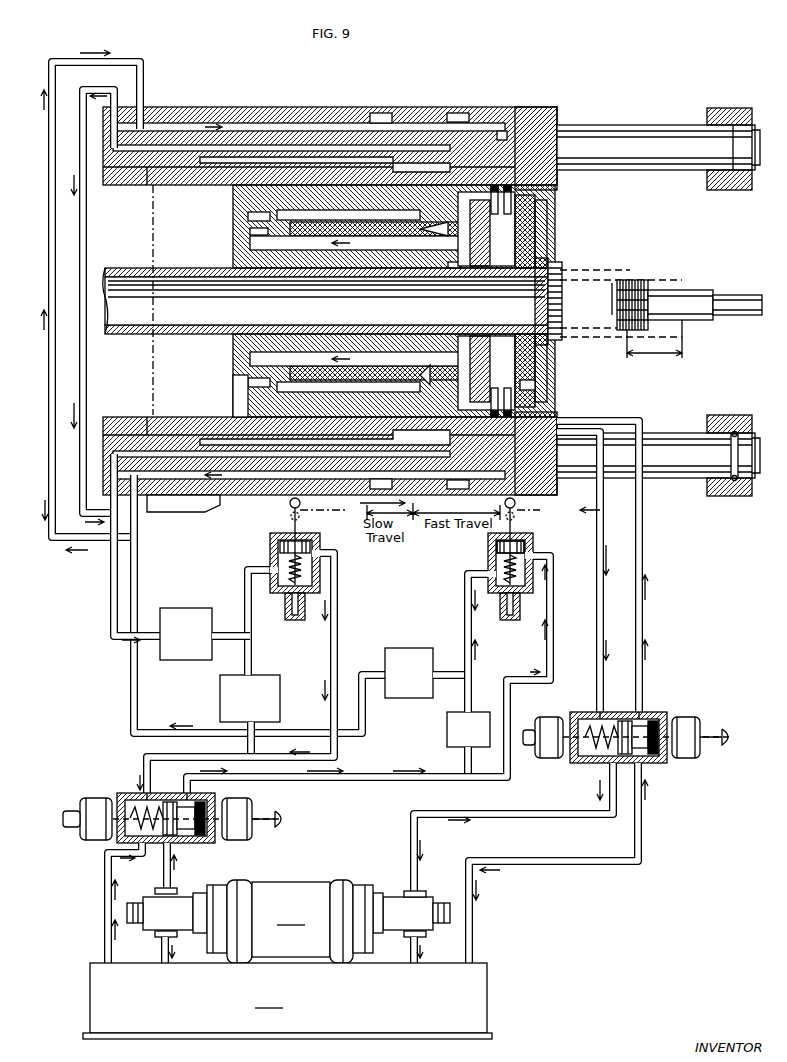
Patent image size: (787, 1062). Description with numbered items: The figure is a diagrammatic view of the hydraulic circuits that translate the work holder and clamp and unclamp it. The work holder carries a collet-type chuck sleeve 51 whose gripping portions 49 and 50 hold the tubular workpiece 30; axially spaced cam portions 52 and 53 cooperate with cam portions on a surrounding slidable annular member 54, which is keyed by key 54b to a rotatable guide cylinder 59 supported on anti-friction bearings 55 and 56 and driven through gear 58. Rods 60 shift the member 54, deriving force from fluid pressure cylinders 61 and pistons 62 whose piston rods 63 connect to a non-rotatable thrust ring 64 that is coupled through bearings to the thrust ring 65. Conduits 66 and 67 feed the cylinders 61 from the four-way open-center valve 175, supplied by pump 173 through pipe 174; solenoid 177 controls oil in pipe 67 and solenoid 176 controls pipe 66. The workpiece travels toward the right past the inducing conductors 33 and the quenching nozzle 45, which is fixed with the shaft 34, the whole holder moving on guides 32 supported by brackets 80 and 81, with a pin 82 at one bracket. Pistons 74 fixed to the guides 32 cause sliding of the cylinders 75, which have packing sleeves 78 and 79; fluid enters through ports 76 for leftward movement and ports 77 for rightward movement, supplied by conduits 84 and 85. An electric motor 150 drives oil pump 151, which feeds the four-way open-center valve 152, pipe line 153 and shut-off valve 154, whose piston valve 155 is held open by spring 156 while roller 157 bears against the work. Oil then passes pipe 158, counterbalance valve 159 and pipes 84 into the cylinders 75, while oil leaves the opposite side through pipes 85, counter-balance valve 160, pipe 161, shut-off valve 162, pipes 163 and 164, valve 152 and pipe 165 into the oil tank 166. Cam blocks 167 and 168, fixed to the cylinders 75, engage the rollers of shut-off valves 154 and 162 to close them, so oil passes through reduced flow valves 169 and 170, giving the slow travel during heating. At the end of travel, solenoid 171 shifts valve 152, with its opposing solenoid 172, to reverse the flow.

The tubular workpiece 30 is at (137, 336).
The guides 32 is at (660, 127).
The inducing conductors 33 is at (628, 279).
The workpiece shaft 34 is at (695, 291).
The quenching nozzle 45 is at (641, 281).
The gripping portion 49 is at (446, 268).
The gripping portion 50 is at (232, 270).
The collet-type chuck sleeve 51 is at (375, 240).
The cam portion 52 is at (248, 232).
The cam portion 53 is at (450, 278).
The annular member 54 is at (316, 250).
The key 54b is at (246, 216).
The anti-friction bearing 55 is at (232, 375).
The anti-friction bearing 56 is at (422, 376).
The gear 58 is at (480, 210).
The guide cylinder 59 is at (305, 222).
The rods 60 is at (545, 348).
The fluid pressure cylinders 61 is at (512, 192).
The pistons 62 is at (492, 300).
The piston rods 63 is at (533, 212).
The non-rotatable thrust ring 64 is at (546, 225).
The thrust ring 65 is at (546, 240).
The fluid pressure conduit 66 is at (598, 561).
The fluid pressure conduit 67 is at (648, 563).
The pistons 74 is at (381, 114).
The cylinders 75 is at (308, 146).
The ports 76 is at (453, 115).
The ports 77 is at (395, 165).
The packing sleeve 78 is at (540, 492).
The packing sleeve 79 is at (228, 124).
The bracket 80 is at (733, 190).
The bracket 81 is at (123, 185).
The retaining pin 82 is at (737, 497).
The conduits 84 is at (48, 218).
The conduits 85 is at (86, 229).
The electric motor 150 is at (290, 921).
The oil pump 151 is at (186, 899).
The four-way open-center valve 152 is at (183, 790).
The pipe line 153 is at (557, 637).
The shut-off valve 154 is at (488, 564).
The piston valve 155 is at (534, 541).
The spring 156 is at (498, 598).
The roller 157 is at (516, 506).
The pipe 158 is at (466, 621).
The counterbalance valve 159 is at (426, 673).
The counter-balance valve 160 is at (186, 634).
The pipe 161 is at (247, 583).
The shut-off valve 162 is at (270, 551).
The pipe 163 is at (339, 622).
The pipe 164 is at (146, 763).
The pipe 165 is at (105, 939).
The oil tank 166 is at (287, 1001).
The cam block 167 is at (360, 520).
The cam block 168 is at (190, 513).
The reduced flow valve 169 is at (468, 744).
The reduced flow valve 170 is at (250, 716).
The solenoid 171 is at (97, 789).
The solenoid 172 is at (249, 801).
The pump 173 is at (388, 898).
The pipe 174 is at (546, 813).
The four-way open-center valve 175 is at (612, 716).
The solenoid 176 is at (545, 718).
The solenoid 177 is at (690, 718).